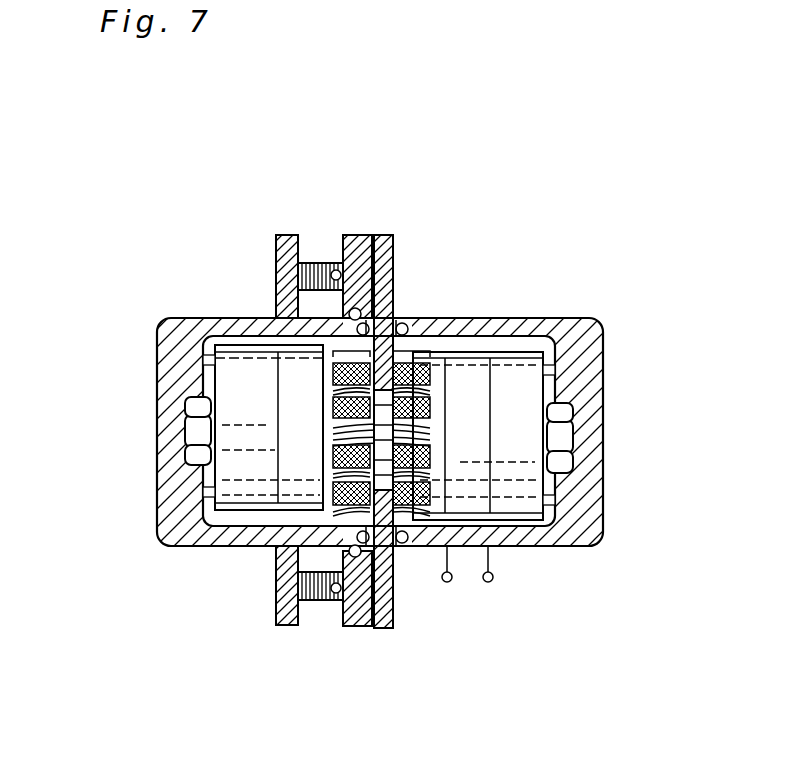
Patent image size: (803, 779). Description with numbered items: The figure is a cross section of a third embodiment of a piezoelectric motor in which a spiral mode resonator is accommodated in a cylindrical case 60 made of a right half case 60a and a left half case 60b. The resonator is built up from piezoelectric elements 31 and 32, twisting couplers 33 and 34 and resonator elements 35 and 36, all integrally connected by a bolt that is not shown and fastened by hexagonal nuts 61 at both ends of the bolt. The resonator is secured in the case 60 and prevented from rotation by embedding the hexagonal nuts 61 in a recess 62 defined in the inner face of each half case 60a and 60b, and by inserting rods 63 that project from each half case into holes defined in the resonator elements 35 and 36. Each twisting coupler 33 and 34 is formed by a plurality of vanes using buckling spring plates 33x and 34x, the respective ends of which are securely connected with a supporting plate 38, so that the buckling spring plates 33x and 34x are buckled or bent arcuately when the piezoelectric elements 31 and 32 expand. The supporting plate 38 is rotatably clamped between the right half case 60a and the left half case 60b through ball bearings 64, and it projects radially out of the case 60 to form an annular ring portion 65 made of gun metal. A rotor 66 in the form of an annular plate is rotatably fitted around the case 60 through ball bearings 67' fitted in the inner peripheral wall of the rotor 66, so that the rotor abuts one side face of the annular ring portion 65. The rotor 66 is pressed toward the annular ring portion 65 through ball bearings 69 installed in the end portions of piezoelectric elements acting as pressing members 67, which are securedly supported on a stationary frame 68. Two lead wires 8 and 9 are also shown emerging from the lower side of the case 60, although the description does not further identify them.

The lead wire 8 is at (450, 583).
The lead wire 9 is at (492, 583).
The piezoelectric element 31 is at (473, 352).
The piezoelectric element 32 is at (292, 366).
The twisting coupler 33 is at (415, 357).
The buckling spring plate 33x is at (440, 438).
The twisting coupler 34 is at (343, 392).
The buckling spring plate 34x is at (350, 432).
The resonator element 35 is at (530, 338).
The resonator element 36 is at (248, 348).
The supporting plate 38 is at (394, 238).
The cylindrical case 60 is at (597, 358).
The right half case 60a is at (604, 332).
The left half case 60b is at (152, 325).
The hexagonal nut 61 is at (197, 430).
The recess 62 is at (197, 402).
The rod 63 is at (205, 360).
The ball bearing 64 is at (404, 332).
The annular ring portion 65 is at (383, 630).
The rotor 66 is at (358, 630).
The pressing member 67 is at (269, 419).
The ball bearing 67' is at (389, 441).
The stationary frame 68 is at (277, 240).
The ball bearing 69 is at (337, 270).